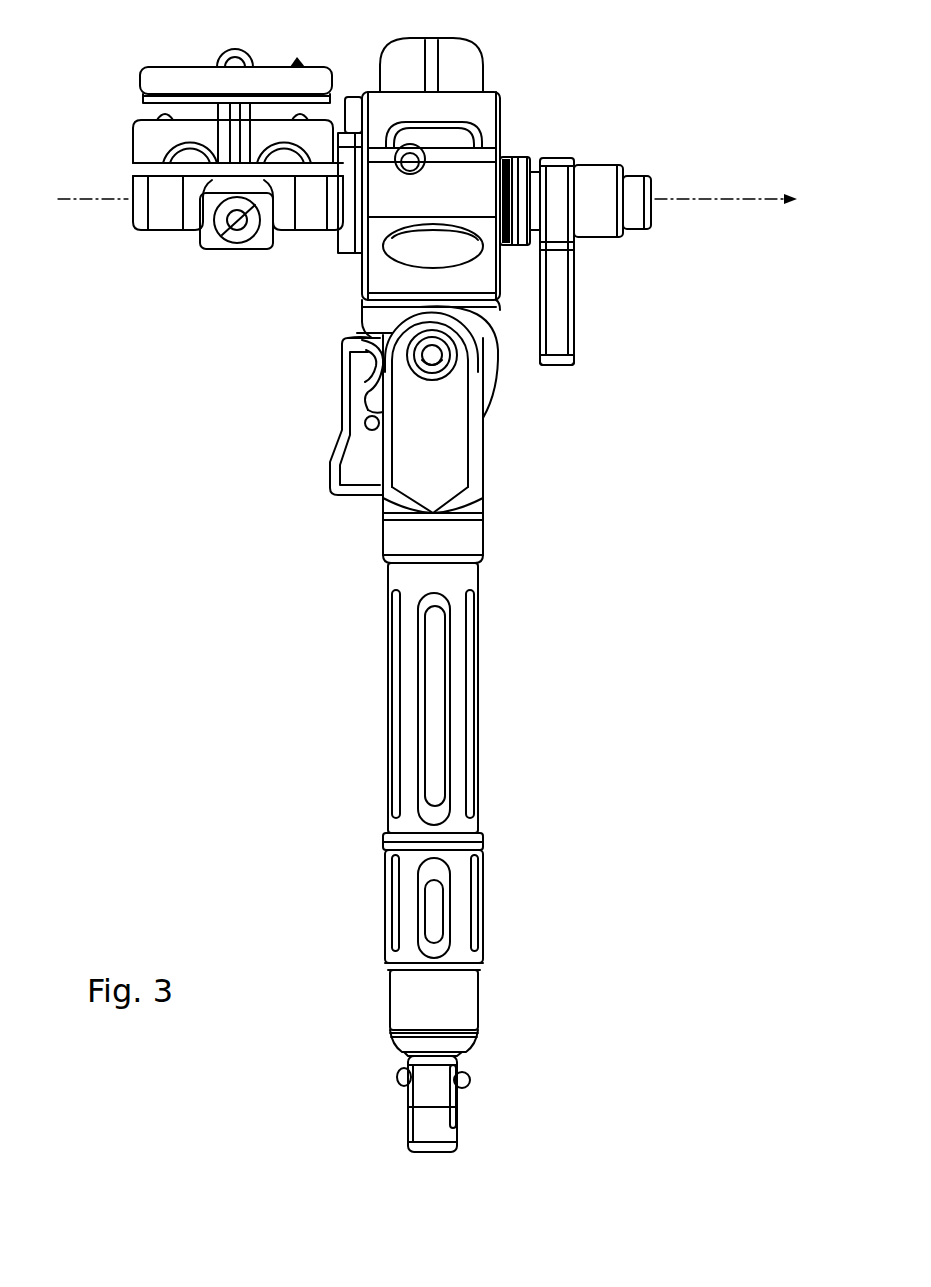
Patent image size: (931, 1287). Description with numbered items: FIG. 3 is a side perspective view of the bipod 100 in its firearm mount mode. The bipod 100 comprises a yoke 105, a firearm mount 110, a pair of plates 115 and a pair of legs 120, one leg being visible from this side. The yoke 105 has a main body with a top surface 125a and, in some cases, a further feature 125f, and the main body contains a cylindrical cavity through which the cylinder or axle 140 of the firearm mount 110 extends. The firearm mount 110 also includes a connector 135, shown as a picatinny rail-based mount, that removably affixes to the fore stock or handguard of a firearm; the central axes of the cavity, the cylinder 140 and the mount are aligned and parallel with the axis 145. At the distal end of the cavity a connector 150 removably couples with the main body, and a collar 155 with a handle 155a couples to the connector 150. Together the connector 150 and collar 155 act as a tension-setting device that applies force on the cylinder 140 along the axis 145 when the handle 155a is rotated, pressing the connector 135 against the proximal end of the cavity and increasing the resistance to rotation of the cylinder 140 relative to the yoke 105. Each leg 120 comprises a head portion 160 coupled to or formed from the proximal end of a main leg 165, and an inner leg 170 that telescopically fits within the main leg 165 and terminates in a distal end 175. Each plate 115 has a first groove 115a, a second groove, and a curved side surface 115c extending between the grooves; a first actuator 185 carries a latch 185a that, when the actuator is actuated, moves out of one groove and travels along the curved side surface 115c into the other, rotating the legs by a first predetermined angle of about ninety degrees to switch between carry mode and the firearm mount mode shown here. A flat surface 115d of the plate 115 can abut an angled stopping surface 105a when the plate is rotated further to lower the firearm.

The bipod 100 is at (765, 962).
The yoke 105 is at (348, 52).
The angled stopping surface 105a is at (478, 292).
The firearm mount 110 is at (130, 46).
The plate 115 is at (373, 347).
The first groove 115a is at (373, 345).
The curved side surface 115c is at (367, 370).
The flat surface 115d is at (477, 300).
The leg 120 is at (585, 538).
The top surface 125a is at (442, 177).
The fastener 125f is at (408, 156).
The connector 135 is at (350, 258).
The cylinder 140 is at (635, 175).
The axis 145 is at (440, 189).
The connector 150 is at (515, 157).
The collar 155 is at (565, 165).
The handle 155a is at (578, 334).
The head portion 160 is at (483, 424).
The main leg 165 is at (386, 712).
The inner leg 170 is at (470, 1057).
The distal end 175 is at (405, 1123).
The first actuator 185 is at (308, 465).
The latch 185a is at (365, 348).